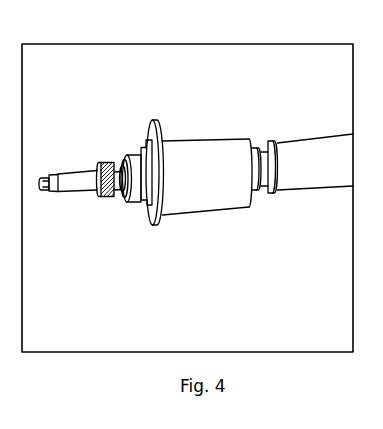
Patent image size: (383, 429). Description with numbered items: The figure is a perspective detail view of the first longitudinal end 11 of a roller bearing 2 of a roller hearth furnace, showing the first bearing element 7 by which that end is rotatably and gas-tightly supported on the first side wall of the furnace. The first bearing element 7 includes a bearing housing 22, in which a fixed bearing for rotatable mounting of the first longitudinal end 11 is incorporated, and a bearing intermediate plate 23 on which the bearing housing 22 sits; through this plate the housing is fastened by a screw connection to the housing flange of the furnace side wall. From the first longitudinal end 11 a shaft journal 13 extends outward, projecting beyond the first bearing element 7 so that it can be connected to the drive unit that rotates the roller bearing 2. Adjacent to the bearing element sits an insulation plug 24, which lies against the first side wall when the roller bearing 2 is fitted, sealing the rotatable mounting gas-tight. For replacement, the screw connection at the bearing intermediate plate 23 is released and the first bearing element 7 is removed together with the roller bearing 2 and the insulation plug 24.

The roller bearing 2 is at (288, 124).
The first bearing element 7 is at (55, 93).
The first longitudinal end 11 is at (144, 114).
The shaft journal 13 is at (105, 198).
The bearing housing 22 is at (140, 153).
The bearing intermediate plate 23 is at (148, 135).
The insulation plug 24 is at (213, 188).